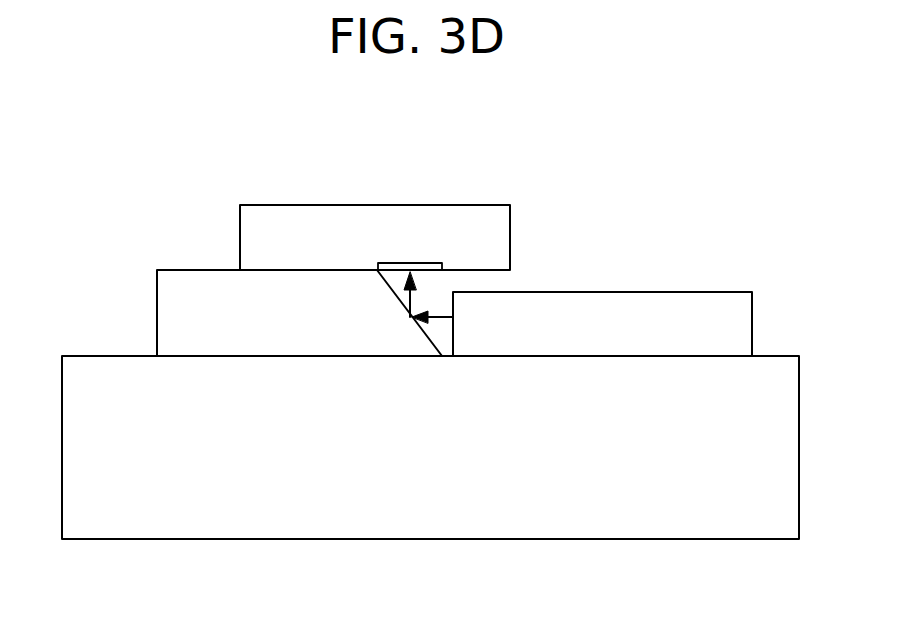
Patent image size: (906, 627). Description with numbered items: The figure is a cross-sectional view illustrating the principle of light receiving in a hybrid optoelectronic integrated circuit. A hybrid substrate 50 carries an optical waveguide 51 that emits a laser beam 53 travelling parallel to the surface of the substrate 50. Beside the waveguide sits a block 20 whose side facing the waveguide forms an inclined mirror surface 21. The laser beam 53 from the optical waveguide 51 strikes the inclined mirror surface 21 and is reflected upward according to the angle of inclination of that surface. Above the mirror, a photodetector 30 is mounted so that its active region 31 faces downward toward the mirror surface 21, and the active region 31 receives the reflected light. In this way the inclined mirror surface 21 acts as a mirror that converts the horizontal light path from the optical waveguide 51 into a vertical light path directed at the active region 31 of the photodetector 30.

The first substrate / chip 20 is at (157, 311).
The inclined mirror surface 21 is at (392, 290).
The photodetector 30 is at (437, 205).
The active region 31 is at (393, 263).
The hybrid substrate 50 is at (783, 356).
The optical waveguide 51 is at (610, 292).
The laser beam 53 is at (437, 317).